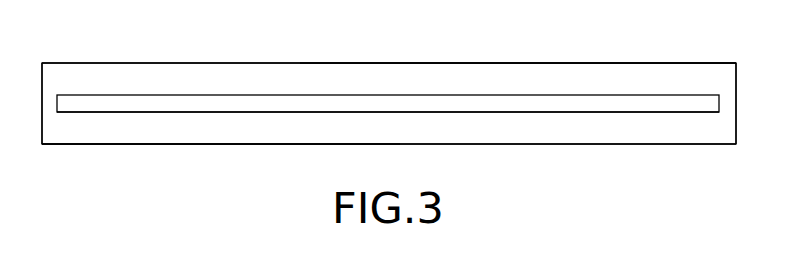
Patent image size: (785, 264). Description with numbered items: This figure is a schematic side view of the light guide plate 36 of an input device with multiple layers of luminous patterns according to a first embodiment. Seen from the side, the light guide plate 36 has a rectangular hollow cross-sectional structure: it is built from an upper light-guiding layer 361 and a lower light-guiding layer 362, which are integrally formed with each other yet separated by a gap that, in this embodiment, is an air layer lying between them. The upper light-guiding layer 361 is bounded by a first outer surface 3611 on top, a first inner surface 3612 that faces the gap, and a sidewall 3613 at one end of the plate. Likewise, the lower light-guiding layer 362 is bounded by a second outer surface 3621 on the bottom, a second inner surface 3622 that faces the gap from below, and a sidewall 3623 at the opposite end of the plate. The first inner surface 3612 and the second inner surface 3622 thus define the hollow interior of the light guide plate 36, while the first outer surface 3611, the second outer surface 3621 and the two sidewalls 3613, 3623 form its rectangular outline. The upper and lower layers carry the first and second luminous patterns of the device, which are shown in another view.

The light guide plate 36 is at (230, 72).
The upper light-guiding layer 361 is at (328, 78).
The first outer surface 3611 is at (459, 63).
The first inner surface 3612 is at (560, 95).
The sidewall 3613 is at (42, 90).
The lower light-guiding layer 362 is at (285, 132).
The second outer surface 3621 is at (188, 144).
The second inner surface 3622 is at (520, 113).
The sidewall 3623 is at (736, 90).